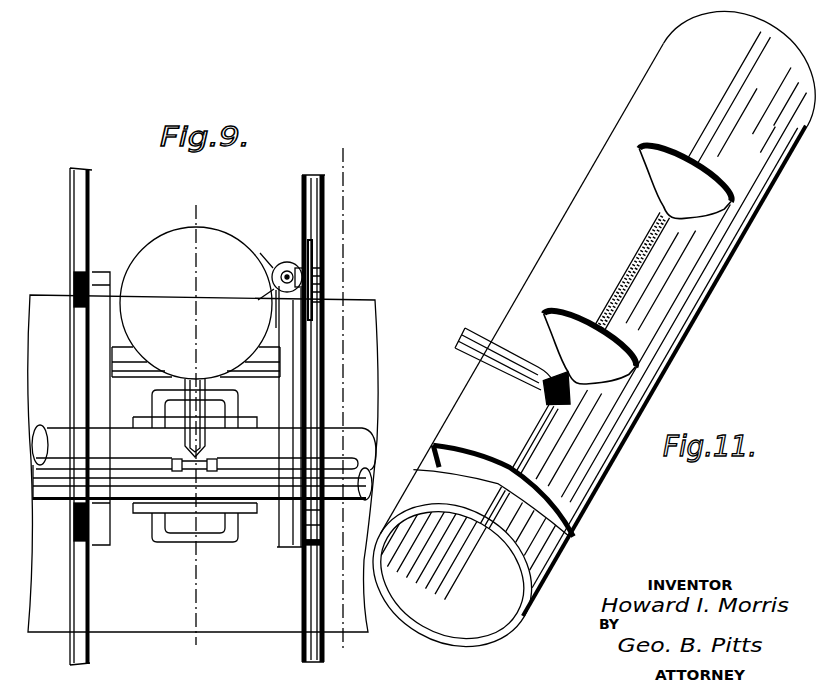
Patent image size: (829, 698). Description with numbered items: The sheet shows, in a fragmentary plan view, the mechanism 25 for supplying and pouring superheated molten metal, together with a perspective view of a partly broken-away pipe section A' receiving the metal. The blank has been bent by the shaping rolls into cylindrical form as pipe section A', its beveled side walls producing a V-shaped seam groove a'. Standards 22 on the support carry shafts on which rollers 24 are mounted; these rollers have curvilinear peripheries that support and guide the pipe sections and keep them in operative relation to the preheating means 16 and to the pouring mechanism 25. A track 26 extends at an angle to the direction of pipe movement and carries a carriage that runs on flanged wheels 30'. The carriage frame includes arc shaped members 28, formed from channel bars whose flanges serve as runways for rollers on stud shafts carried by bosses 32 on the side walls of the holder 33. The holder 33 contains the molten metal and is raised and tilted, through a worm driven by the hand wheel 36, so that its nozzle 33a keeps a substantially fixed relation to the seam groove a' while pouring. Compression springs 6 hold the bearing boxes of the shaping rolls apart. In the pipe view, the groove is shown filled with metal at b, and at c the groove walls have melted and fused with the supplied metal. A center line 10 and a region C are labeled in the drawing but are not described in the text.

In FIG. 9, the compression spring 6 is at (195, 424).
In FIG. 9, the centre line of frame bar 10 is at (340, 399).
In FIG. 9, the preheating means 16 is at (128, 461).
In FIG. 9, the standard 22 is at (210, 540).
In FIG. 9, the roller 24 is at (244, 508).
In FIG. 9, the mechanism for supplying and pouring molten metal 25 is at (266, 258).
In FIG. 9, the track 26 is at (78, 596).
In FIG. 9, the arc shaped member 28 is at (294, 382).
In FIG. 9, the flanged wheel 30' is at (211, 415).
In FIG. 9, the boss 32 is at (116, 298).
In FIG. 9, the holder 33 is at (221, 243).
In FIG. 9, the pouring spout or nozzle 33a is at (207, 458).
In FIG. 9, the hand wheel 36 is at (311, 247).
In FIG. 9, the pipe section A' is at (222, 452).
In FIG. 11, the pipe section A' is at (588, 337).
In FIG. 11, the seam groove a' is at (525, 447).
In FIG. 11, the filled seam groove b is at (562, 403).
In FIG. 11, the fused seam c is at (678, 186).
In FIG. 11, the groove C is at (664, 211).